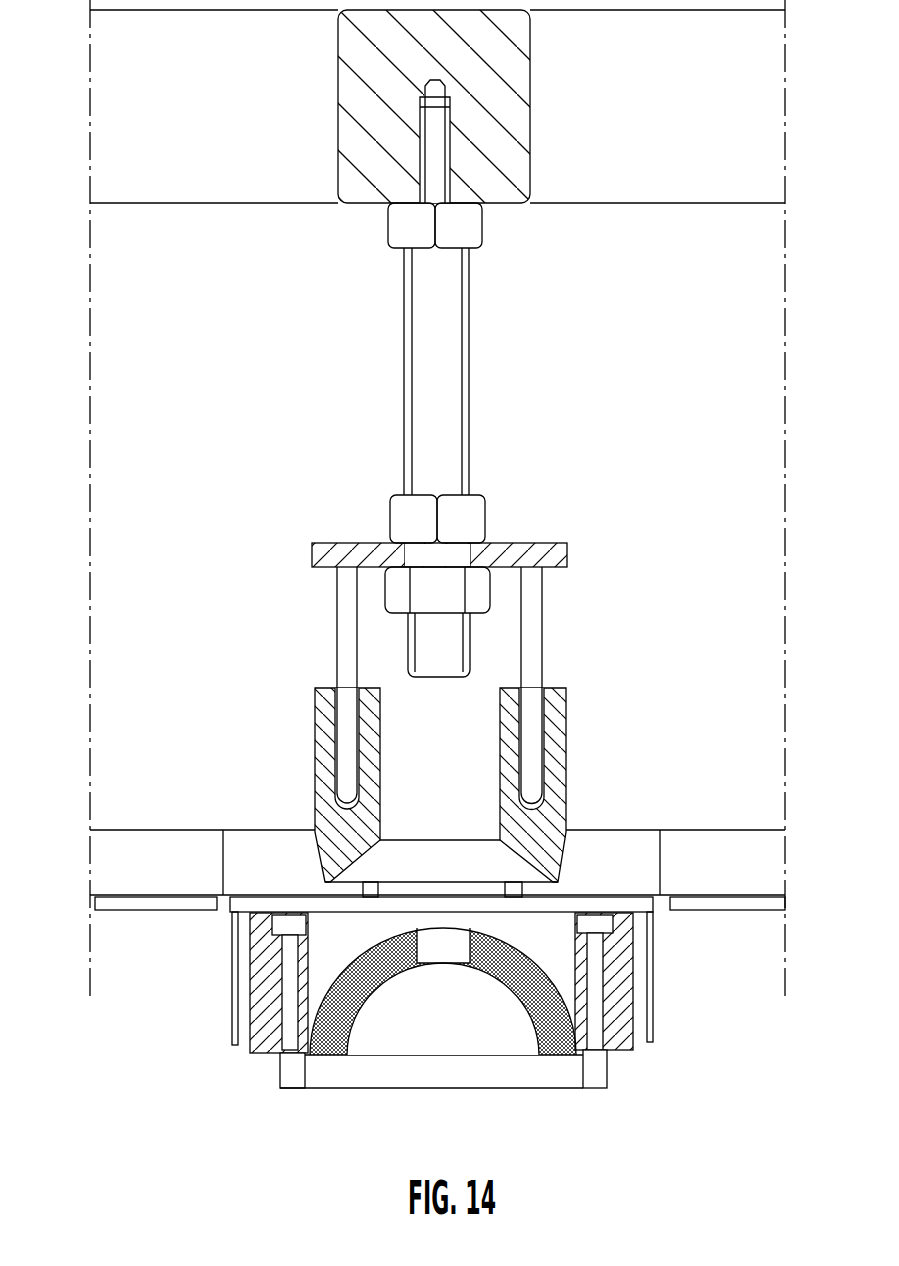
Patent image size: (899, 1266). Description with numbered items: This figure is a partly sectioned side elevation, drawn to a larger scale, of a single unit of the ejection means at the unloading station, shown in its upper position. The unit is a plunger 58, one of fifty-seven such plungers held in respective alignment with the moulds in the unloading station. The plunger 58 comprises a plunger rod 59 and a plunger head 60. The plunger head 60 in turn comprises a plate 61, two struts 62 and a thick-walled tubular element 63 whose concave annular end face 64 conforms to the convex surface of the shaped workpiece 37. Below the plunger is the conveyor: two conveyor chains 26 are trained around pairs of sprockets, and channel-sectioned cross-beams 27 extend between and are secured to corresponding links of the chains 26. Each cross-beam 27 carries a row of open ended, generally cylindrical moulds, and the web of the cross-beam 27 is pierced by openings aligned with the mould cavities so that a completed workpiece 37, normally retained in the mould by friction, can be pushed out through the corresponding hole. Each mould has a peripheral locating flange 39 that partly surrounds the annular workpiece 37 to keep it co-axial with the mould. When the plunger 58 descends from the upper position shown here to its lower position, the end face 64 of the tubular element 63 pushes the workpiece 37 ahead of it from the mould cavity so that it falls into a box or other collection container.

The conveyor chains 26 is at (733, 885).
The cross-beam 27 is at (655, 1010).
The shaped workpiece 37 is at (507, 1040).
The peripheral locating flange 39 is at (338, 1078).
The plunger 58 is at (635, 317).
The plunger rod 59 is at (430, 365).
The plunger head 60 is at (585, 724).
The plate 61 is at (537, 548).
The struts 62 is at (343, 618).
The thick-walled tubular element 63 is at (565, 808).
The concave annular end face 64 is at (370, 862).